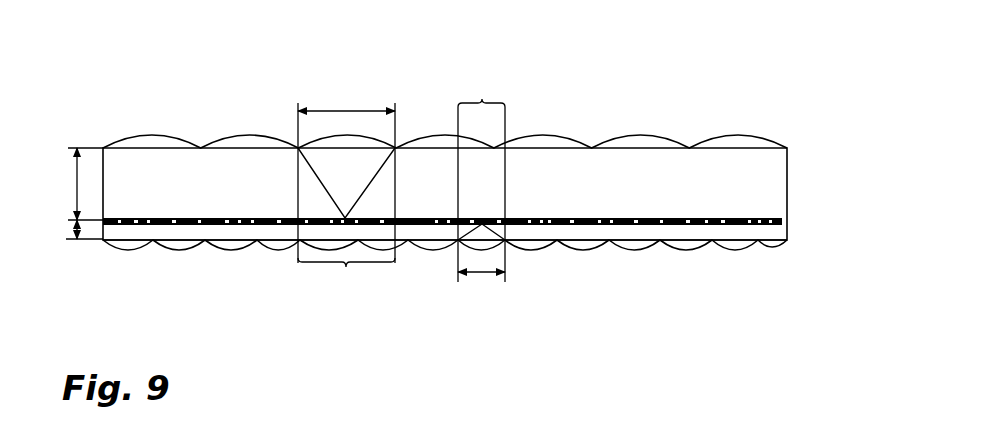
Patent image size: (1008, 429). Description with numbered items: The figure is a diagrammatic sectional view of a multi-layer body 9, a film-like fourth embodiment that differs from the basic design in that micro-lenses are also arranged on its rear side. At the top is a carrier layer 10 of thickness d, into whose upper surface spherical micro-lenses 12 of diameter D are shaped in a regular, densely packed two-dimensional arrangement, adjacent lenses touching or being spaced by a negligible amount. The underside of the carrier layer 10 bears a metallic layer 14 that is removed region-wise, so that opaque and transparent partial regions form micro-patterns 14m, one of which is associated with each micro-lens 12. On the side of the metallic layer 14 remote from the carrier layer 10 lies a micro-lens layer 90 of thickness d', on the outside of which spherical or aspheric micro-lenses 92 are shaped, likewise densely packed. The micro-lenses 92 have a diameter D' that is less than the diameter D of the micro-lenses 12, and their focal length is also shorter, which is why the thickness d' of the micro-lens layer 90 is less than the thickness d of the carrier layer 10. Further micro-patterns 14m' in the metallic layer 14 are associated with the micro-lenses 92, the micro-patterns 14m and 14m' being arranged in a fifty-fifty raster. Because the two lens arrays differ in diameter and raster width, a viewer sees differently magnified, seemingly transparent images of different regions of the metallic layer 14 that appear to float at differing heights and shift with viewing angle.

The multi-layer body 9 is at (588, 103).
The carrier layer 10 is at (774, 160).
The micro-lenses 12 is at (778, 102).
The metallic layer 14 is at (777, 222).
The micro-lens layer 90 is at (772, 233).
The micro-lenses 92 is at (687, 245).
The micro-patterns 14m is at (346, 278).
The micro-patterns 14m' is at (493, 174).
The diameter D is at (346, 164).
The diameter D' is at (481, 303).
The thickness d is at (69, 184).
The thickness d' is at (69, 241).